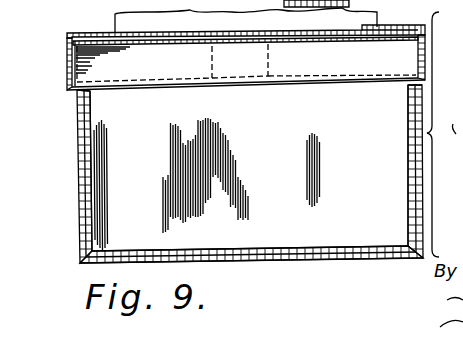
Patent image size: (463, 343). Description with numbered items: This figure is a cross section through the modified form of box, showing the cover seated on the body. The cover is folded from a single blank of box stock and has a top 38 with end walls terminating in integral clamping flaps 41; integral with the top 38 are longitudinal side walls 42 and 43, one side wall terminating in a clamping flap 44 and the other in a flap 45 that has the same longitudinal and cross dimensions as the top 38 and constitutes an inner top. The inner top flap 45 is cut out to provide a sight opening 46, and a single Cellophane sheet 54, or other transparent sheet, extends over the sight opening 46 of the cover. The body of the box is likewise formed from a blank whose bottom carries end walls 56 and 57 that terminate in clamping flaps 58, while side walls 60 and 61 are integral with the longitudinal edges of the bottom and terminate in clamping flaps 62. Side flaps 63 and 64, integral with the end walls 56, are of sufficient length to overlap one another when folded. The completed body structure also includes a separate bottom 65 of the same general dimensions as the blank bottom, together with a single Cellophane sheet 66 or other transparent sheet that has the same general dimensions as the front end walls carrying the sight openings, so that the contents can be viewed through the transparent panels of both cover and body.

The top 38 is at (80, 37).
The clamping flaps 41 is at (246, 43).
The side wall 42 is at (66, 66).
The side wall 43 is at (92, 70).
The clamping flap 44 is at (77, 33).
The flap 45 is at (380, 36).
The sight opening 46 is at (331, 42).
The Cellophane sheet 54 is at (250, 13).
The end wall 56 is at (445, 134).
The end wall 57 is at (241, 175).
The clamping flaps 58 is at (295, 265).
The side wall 60 is at (80, 190).
The side wall 61 is at (95, 192).
The clamping flaps 62 is at (111, 253).
The side flap 63 is at (88, 137).
The side flap 64 is at (84, 160).
The separate bottom 65 is at (347, 248).
The Cellophane sheet 66 is at (456, 141).